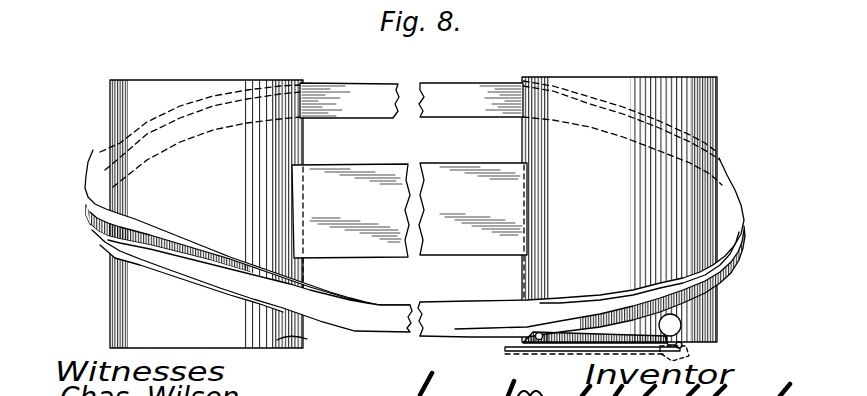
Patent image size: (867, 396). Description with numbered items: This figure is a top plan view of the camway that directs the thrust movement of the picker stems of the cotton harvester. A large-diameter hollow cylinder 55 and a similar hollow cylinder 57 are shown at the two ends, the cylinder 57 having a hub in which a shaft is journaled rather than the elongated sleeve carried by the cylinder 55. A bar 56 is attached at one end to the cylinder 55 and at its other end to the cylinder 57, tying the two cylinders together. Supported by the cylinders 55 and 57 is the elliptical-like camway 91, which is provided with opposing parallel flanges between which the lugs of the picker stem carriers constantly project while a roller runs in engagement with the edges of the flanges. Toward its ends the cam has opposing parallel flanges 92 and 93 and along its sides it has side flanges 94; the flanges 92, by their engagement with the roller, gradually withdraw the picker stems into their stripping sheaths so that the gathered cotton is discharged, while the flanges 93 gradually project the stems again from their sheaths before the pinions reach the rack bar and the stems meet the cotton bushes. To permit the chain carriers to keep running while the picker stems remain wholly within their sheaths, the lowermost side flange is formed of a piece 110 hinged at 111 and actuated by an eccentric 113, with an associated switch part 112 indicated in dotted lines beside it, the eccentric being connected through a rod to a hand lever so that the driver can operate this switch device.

The hollow cylinder 55 is at (206, 214).
The bar 56 is at (409, 170).
The hollow cylinder 57 is at (619, 209).
The elliptical camway 91 is at (223, 292).
The opposing parallel flanges 92 is at (84, 187).
The opposing parallel flanges 93 is at (743, 216).
The side flanges 94 is at (457, 301).
The hinged piece 110 is at (618, 315).
The hinge 111 is at (522, 350).
The dashed clamp part 112 is at (722, 313).
The eccentric 113 is at (683, 326).